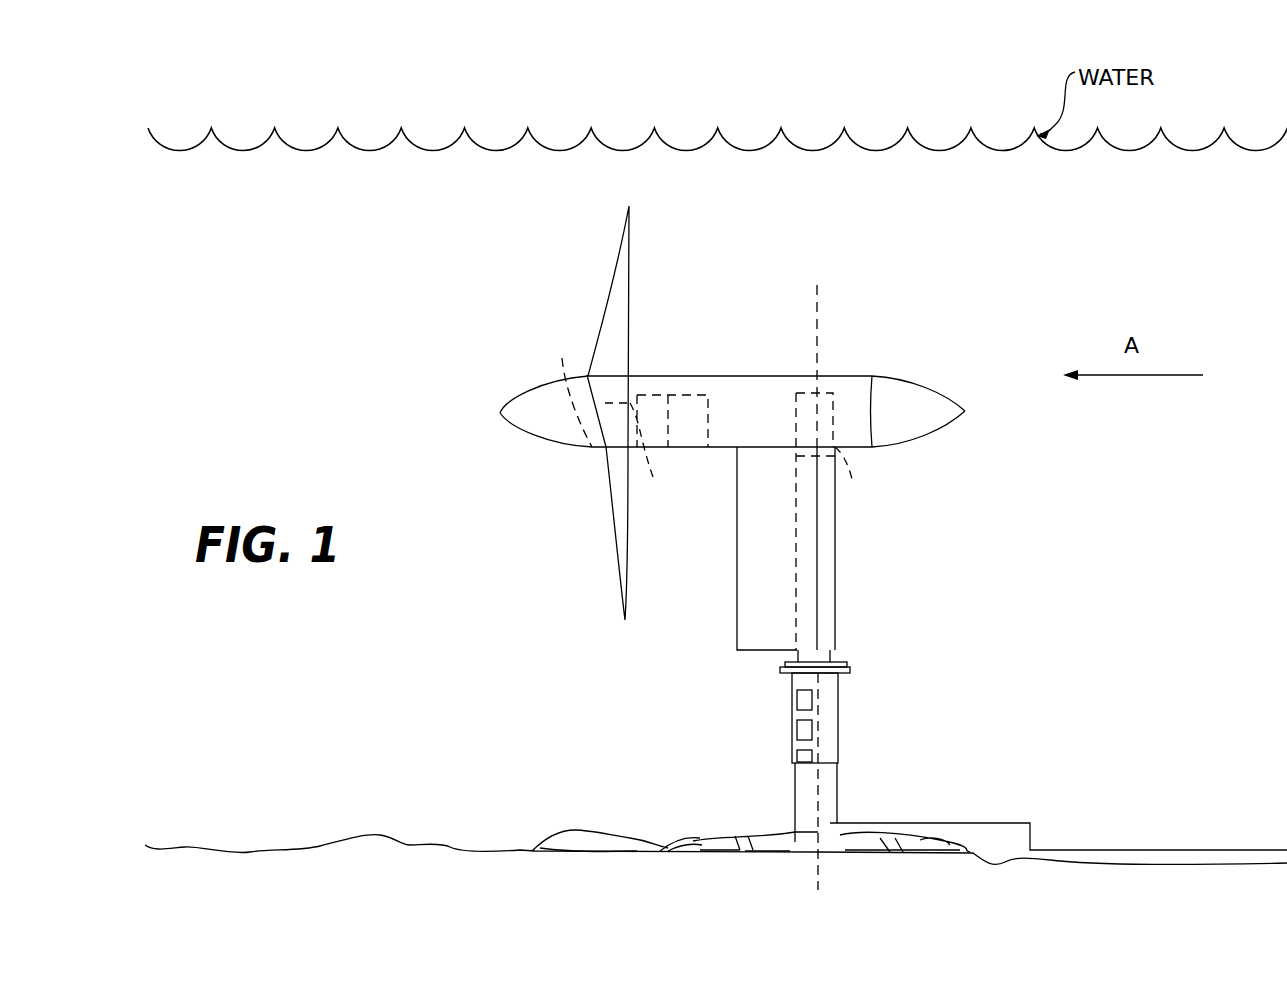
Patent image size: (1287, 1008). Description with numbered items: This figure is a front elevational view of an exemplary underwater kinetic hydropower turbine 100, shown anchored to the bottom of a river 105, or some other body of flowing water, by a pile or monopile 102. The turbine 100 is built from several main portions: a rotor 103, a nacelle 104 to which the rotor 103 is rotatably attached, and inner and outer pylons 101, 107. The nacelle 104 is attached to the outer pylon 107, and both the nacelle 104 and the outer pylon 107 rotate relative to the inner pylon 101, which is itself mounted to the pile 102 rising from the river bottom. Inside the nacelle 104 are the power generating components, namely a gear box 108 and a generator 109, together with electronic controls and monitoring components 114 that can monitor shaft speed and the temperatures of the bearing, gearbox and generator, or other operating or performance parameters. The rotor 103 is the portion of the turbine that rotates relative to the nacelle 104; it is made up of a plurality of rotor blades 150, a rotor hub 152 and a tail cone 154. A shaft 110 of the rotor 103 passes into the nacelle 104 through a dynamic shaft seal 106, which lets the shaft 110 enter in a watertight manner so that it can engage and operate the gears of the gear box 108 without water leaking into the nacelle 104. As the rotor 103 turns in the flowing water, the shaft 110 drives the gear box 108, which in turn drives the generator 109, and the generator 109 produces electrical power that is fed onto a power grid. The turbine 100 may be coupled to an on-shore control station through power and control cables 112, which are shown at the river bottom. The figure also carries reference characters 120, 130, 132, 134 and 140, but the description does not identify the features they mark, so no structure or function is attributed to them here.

The turbine 100 is at (832, 241).
The inner pylon 101 is at (810, 575).
The pile 102 is at (830, 792).
The rotor 103 is at (575, 363).
The nacelle 104 is at (850, 385).
The river 105 is at (597, 832).
The dynamic shaft seal 106 is at (560, 358).
The outer pylon 107 is at (755, 558).
The gear box 108 is at (678, 378).
The generator 109 is at (727, 391).
The shaft 110 is at (652, 478).
The power and control cables 112 is at (1033, 812).
The electronic controls and monitoring components 114 is at (853, 483).
The vertical axis 120 is at (828, 314).
The connector assembly 130 is at (852, 682).
The connector housing 132 is at (833, 725).
The latches 134 is at (792, 716).
The flange 140 is at (776, 680).
The rotor blades 150 is at (625, 290).
The rotor hub 152 is at (617, 365).
The tail cone 154 is at (540, 412).